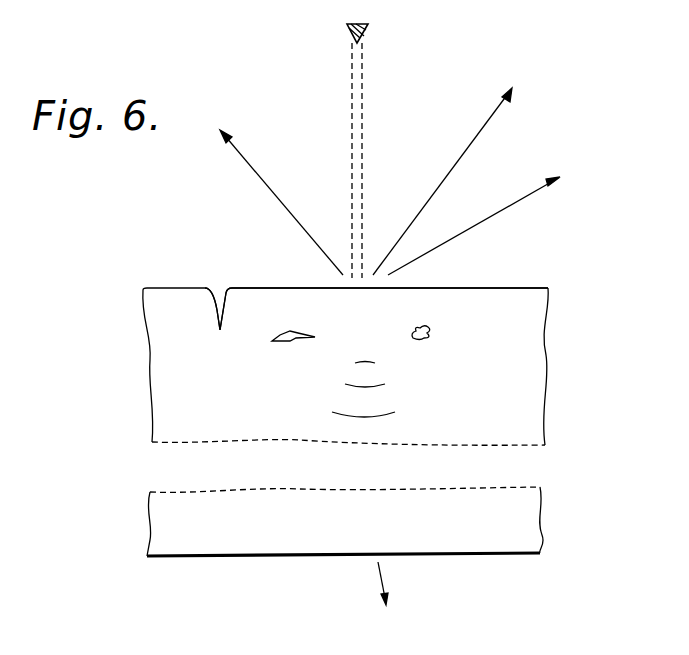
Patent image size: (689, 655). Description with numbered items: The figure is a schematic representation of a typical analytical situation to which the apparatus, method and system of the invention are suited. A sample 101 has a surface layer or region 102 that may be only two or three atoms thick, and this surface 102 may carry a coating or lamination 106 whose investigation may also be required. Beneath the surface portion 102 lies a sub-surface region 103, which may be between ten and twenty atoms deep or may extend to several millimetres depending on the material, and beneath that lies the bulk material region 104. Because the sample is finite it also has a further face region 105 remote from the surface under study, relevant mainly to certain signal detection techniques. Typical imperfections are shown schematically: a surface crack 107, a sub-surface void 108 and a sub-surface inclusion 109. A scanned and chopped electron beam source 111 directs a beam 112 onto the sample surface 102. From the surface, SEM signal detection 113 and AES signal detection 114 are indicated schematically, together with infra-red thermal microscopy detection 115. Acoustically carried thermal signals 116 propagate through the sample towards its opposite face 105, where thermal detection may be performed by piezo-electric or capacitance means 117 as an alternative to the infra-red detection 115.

The sample 101 is at (578, 357).
The surface layer 102 is at (121, 293).
The sub-surface region 103 is at (121, 345).
The bulk material region 104 is at (121, 427).
The further face region 105 is at (192, 557).
The coating or lamination 106 is at (533, 291).
The surface crack 107 is at (218, 302).
The sub-surface void 108 is at (290, 342).
The sub-surface inclusion 109 is at (416, 342).
The scanned and chopped electron beam source 111 is at (368, 31).
The electron beam 112 is at (363, 108).
The SEM signal detection 113 is at (273, 192).
The AES signal detection 114 is at (510, 206).
The infra-red thermal microscopy detection 115 is at (478, 133).
The acoustically carried thermal signals 116 is at (387, 410).
The piezo-electric or capacitance thermal detection 117 is at (381, 577).